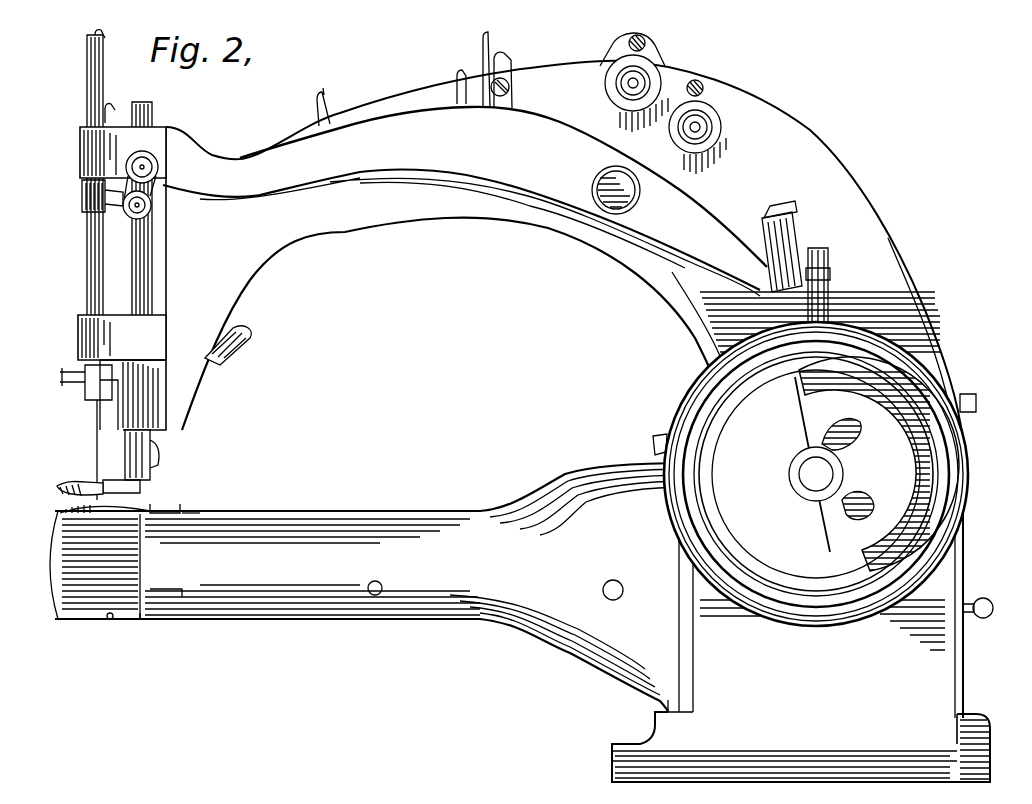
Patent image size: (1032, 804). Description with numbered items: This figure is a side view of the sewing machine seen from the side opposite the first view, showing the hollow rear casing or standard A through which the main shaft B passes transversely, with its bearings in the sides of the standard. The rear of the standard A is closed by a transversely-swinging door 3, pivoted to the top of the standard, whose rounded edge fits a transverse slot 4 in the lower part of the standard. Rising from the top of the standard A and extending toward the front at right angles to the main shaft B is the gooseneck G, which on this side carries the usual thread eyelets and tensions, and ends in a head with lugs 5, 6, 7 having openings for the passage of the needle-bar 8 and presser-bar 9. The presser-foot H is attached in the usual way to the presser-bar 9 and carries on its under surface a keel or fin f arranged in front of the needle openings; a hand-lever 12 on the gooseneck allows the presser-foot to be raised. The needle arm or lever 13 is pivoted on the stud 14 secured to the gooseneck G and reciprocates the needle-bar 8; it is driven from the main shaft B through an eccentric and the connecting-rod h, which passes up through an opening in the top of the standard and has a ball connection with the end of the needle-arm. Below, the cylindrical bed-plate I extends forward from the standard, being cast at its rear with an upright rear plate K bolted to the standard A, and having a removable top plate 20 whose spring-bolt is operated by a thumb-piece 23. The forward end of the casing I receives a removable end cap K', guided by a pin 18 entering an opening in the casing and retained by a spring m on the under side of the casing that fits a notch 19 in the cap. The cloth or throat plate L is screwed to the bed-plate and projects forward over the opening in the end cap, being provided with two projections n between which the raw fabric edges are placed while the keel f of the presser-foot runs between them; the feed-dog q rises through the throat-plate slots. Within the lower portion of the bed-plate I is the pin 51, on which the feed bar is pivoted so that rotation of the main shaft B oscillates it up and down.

The needle arm 13 is at (563, 389).
The gooseneck G is at (451, 307).
The stud 14 is at (628, 190).
The connecting-rod h is at (823, 298).
The standard A is at (812, 502).
The rear plate K is at (691, 678).
The top plate 20 is at (370, 587).
The bed-plate I is at (384, 567).
The end cap K' is at (101, 566).
The pin 18 is at (166, 581).
The notch 19 is at (110, 619).
The spring m is at (140, 619).
The pin 51 is at (375, 592).
The projections n is at (62, 508).
The feed-dog q is at (142, 506).
The throat-plate L is at (182, 501).
The transverse slot 4 is at (978, 737).
The door 3 is at (964, 647).
The main shaft B is at (805, 478).
The thumb-piece 23 is at (653, 442).
The needle-bar 8 is at (90, 258).
The presser-bar 9 is at (152, 265).
The lug 5 is at (80, 156).
The lug 6 is at (106, 407).
The lug 7 is at (164, 410).
The hand-lever 12 is at (218, 358).
The presser-foot H is at (140, 484).
The keel f is at (60, 486).